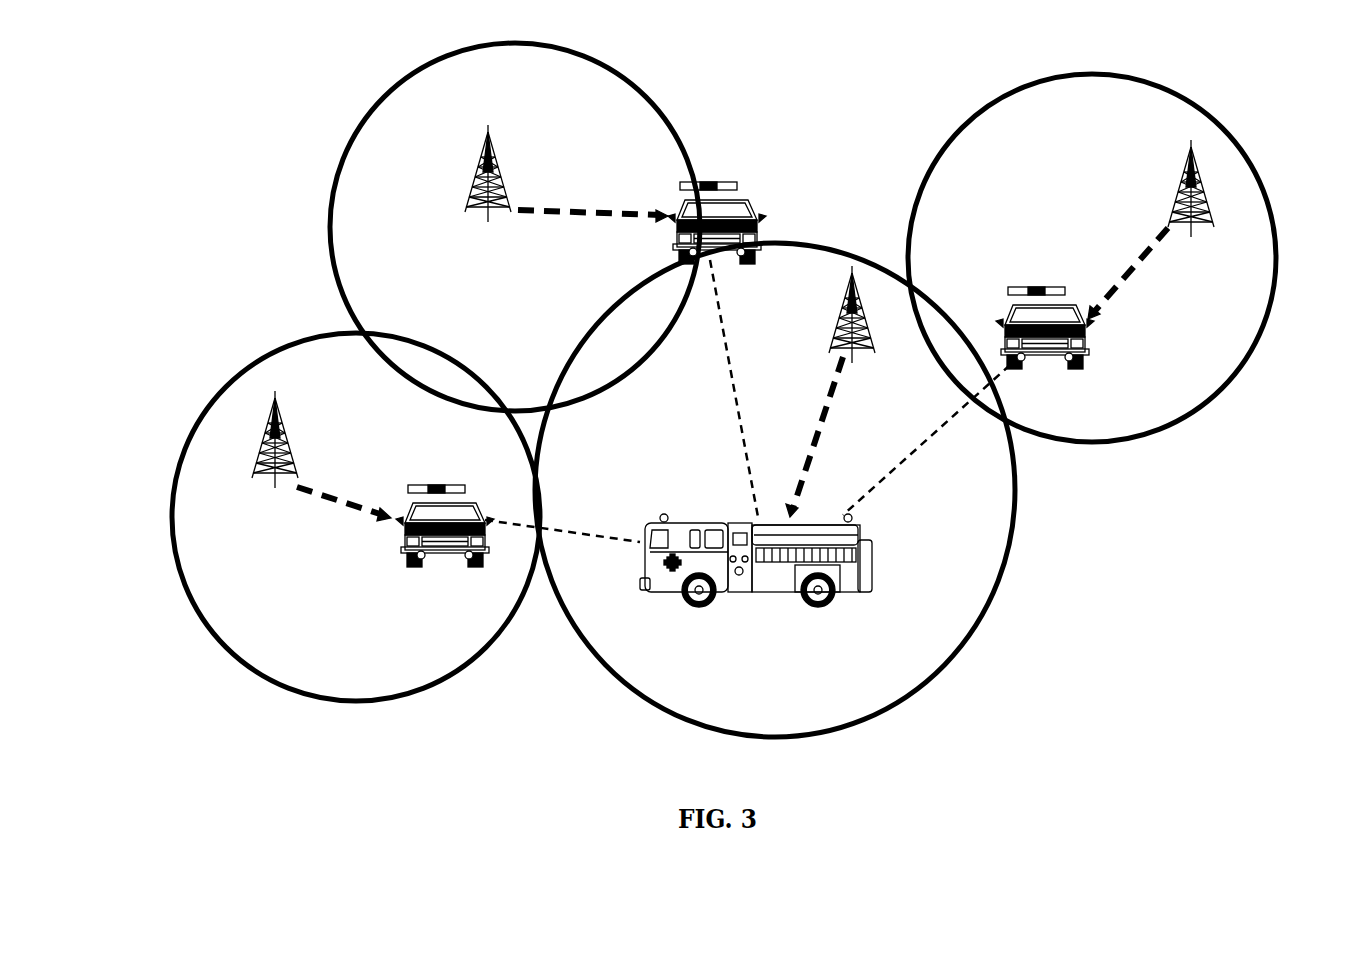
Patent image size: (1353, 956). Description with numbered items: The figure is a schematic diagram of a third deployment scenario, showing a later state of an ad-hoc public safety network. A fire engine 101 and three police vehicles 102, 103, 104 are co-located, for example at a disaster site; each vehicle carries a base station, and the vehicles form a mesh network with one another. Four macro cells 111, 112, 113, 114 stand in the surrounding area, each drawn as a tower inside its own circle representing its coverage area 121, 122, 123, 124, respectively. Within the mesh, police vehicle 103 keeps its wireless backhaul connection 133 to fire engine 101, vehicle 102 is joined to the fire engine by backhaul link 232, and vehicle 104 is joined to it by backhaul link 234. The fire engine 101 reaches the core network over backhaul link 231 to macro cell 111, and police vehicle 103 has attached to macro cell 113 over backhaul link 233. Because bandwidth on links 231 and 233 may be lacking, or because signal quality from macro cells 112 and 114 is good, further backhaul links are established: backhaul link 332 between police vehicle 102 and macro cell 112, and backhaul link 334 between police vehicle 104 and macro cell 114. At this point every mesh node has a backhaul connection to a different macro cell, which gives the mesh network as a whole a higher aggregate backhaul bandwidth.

The fire engine 101 is at (700, 518).
The police vehicle 102 is at (663, 207).
The police vehicle 103 is at (1042, 285).
The police vehicle 104 is at (397, 502).
The macro cell 111 is at (828, 337).
The macro cell 112 is at (480, 170).
The macro cell 113 is at (1203, 210).
The macro cell 114 is at (258, 490).
The coverage area 121 is at (820, 245).
The coverage area 122 is at (332, 195).
The coverage area 123 is at (1232, 132).
The coverage area 124 is at (173, 473).
The backhaul connection 133 is at (1000, 382).
The backhaul link 231 is at (822, 470).
The backhaul link 232 is at (740, 428).
The backhaul link 233 is at (1130, 288).
The backhaul link 234 is at (528, 530).
The backhaul link 332 is at (595, 212).
The backhaul link 334 is at (322, 517).